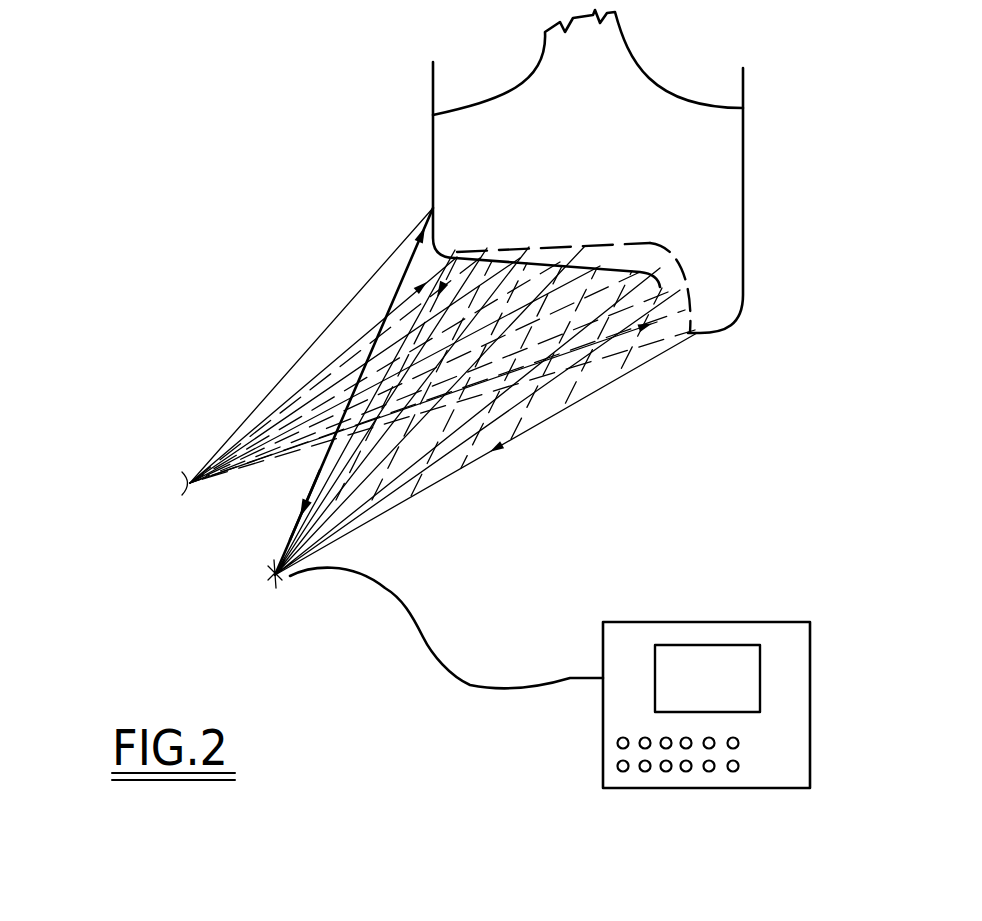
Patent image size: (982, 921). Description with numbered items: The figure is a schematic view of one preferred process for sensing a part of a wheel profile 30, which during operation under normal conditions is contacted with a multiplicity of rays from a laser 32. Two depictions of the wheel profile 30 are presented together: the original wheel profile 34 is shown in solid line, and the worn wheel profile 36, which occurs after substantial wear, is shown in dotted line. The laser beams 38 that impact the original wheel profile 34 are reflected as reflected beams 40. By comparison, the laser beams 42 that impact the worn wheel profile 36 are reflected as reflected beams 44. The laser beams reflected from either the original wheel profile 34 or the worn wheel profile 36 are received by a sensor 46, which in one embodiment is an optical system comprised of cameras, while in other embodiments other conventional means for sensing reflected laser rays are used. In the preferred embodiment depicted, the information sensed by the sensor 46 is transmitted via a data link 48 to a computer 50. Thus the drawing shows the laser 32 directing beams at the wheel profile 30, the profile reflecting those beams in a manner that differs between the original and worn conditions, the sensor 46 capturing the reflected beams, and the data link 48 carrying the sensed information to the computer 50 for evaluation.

The wheel profile 30 is at (743, 258).
The laser 32 is at (178, 484).
The original wheel profile 34 is at (490, 250).
The worn wheel profile 36 is at (607, 245).
The laser beams 38 is at (315, 338).
The reflected beams 40 is at (313, 488).
The laser beams 42 is at (353, 337).
The reflected beams 44 is at (473, 450).
The sensor 46 is at (276, 588).
The data link 48 is at (418, 620).
The computer 50 is at (811, 660).